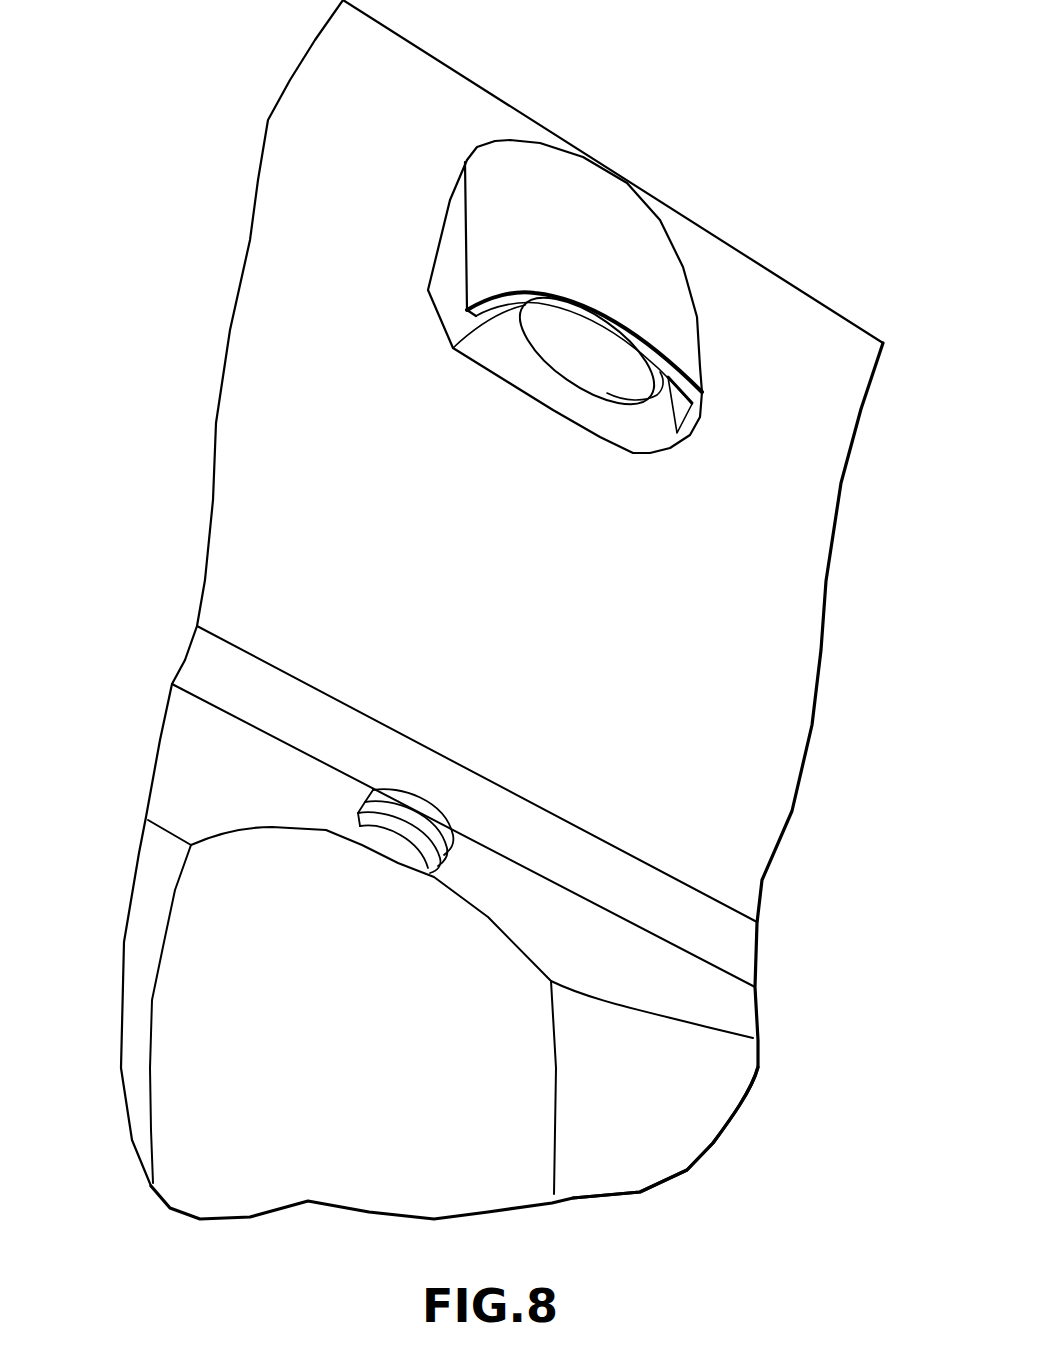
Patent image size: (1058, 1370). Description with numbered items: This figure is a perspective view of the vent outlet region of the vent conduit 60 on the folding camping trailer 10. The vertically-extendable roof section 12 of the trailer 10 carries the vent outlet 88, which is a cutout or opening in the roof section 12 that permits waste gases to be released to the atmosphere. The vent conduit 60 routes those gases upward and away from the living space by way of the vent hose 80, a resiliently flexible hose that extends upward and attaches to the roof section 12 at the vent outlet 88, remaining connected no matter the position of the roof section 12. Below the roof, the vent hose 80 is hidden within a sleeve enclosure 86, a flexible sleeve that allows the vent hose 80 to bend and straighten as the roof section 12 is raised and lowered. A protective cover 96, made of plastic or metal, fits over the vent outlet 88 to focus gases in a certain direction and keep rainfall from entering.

The folding camping trailer 10 is at (205, 135).
The roof section 12 is at (392, 102).
The protective cover 96 is at (597, 183).
The vent outlet 88 is at (622, 352).
The vent conduit 60 is at (301, 798).
The vent hose 80 is at (450, 851).
The sleeve enclosure 86 is at (685, 1147).